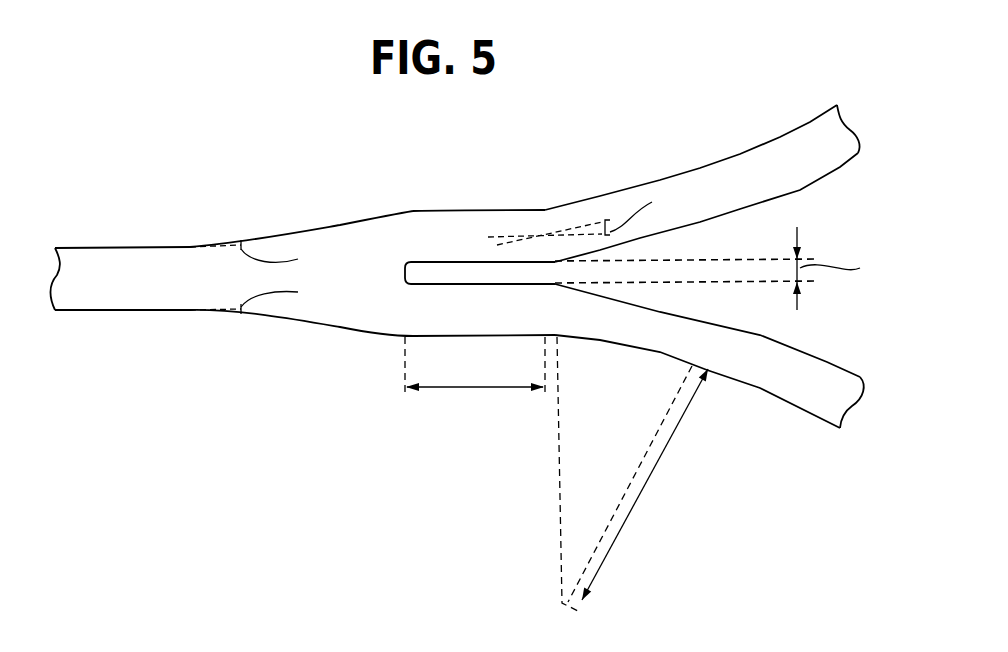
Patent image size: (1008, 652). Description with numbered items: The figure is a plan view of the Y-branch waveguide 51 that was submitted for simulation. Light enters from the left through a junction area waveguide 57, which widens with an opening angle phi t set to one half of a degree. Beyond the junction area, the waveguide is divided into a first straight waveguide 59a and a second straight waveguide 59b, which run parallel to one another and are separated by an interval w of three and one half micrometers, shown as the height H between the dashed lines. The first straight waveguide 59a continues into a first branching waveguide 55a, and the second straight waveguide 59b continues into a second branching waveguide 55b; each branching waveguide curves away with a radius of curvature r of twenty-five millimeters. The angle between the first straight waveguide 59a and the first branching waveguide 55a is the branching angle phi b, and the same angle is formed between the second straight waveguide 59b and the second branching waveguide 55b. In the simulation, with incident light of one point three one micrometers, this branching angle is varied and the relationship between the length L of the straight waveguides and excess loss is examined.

The Y-branch waveguide 51 is at (165, 186).
The junction area waveguide 57 is at (343, 240).
The first straight waveguide 59a is at (493, 223).
The second straight waveguide 59b is at (447, 297).
The first branching waveguide 55a is at (723, 177).
The second branching waveguide 55b is at (767, 377).